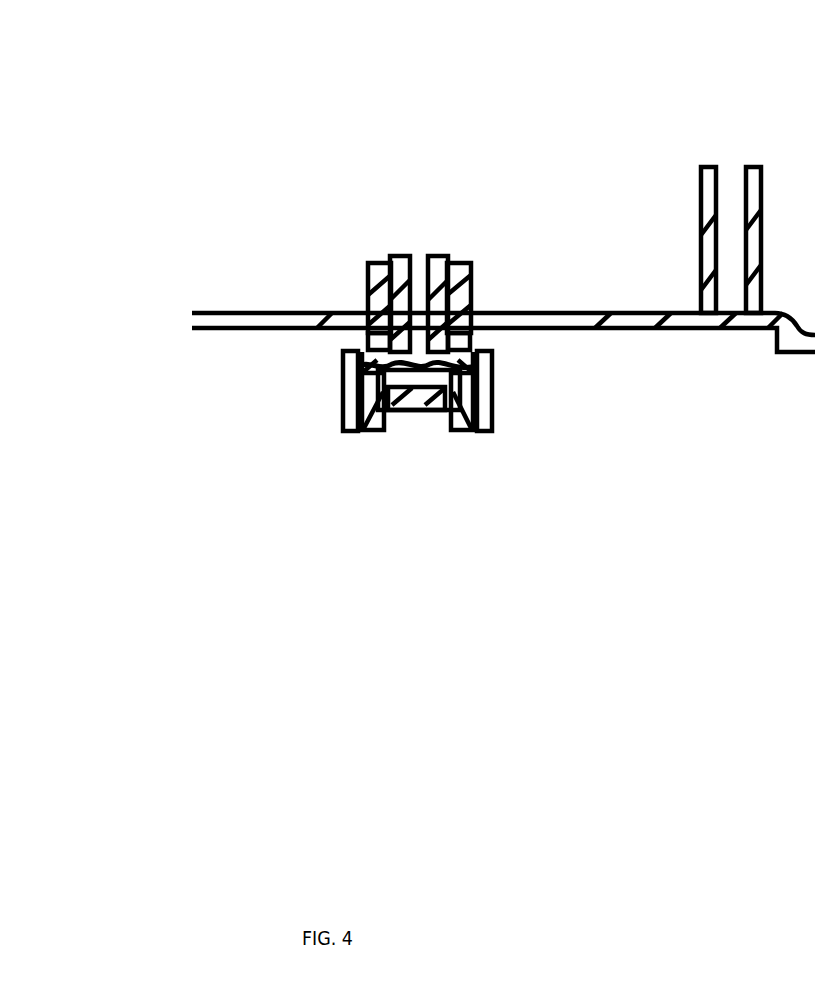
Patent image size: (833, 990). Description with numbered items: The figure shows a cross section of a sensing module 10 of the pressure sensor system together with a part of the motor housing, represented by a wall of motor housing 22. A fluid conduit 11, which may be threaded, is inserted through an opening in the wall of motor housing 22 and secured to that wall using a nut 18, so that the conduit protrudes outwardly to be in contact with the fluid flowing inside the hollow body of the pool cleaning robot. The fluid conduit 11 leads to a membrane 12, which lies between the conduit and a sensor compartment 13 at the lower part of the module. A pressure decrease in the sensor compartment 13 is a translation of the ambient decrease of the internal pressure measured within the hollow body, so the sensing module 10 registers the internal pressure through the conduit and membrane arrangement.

The sensing module 10 is at (343, 279).
The fluid conduit 11 is at (418, 262).
The membrane 12 is at (462, 360).
The sensor compartment 13 is at (343, 393).
The nut 18 is at (475, 267).
The wall of motor housing 22 is at (567, 313).